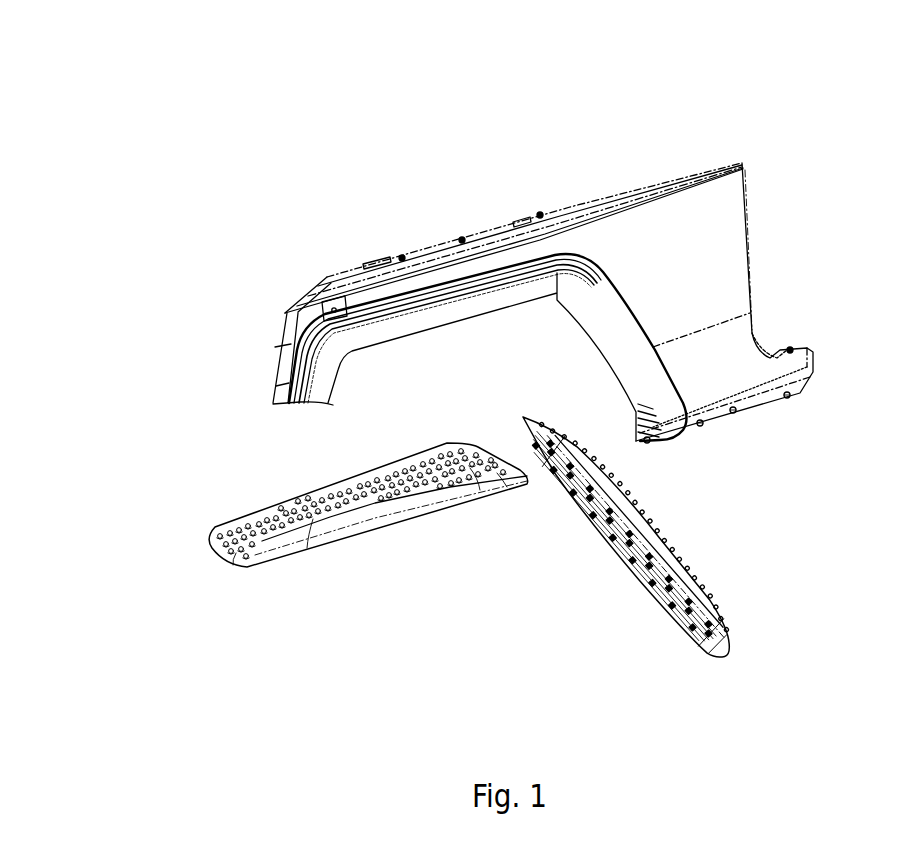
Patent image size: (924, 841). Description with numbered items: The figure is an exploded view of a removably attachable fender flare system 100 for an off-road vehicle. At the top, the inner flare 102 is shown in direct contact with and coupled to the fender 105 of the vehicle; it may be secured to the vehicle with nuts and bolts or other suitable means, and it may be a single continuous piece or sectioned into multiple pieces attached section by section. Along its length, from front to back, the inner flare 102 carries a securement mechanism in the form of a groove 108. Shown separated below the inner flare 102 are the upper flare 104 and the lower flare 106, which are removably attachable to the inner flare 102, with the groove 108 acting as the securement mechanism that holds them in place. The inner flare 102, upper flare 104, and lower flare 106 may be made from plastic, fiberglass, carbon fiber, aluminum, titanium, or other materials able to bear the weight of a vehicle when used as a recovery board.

The removably attachable fender flare system 100 is at (298, 104).
The inner flare 102 is at (582, 291).
The upper flare 104 is at (308, 543).
The fender 105 is at (728, 257).
The lower flare 106 is at (668, 562).
The groove 108 is at (470, 276).